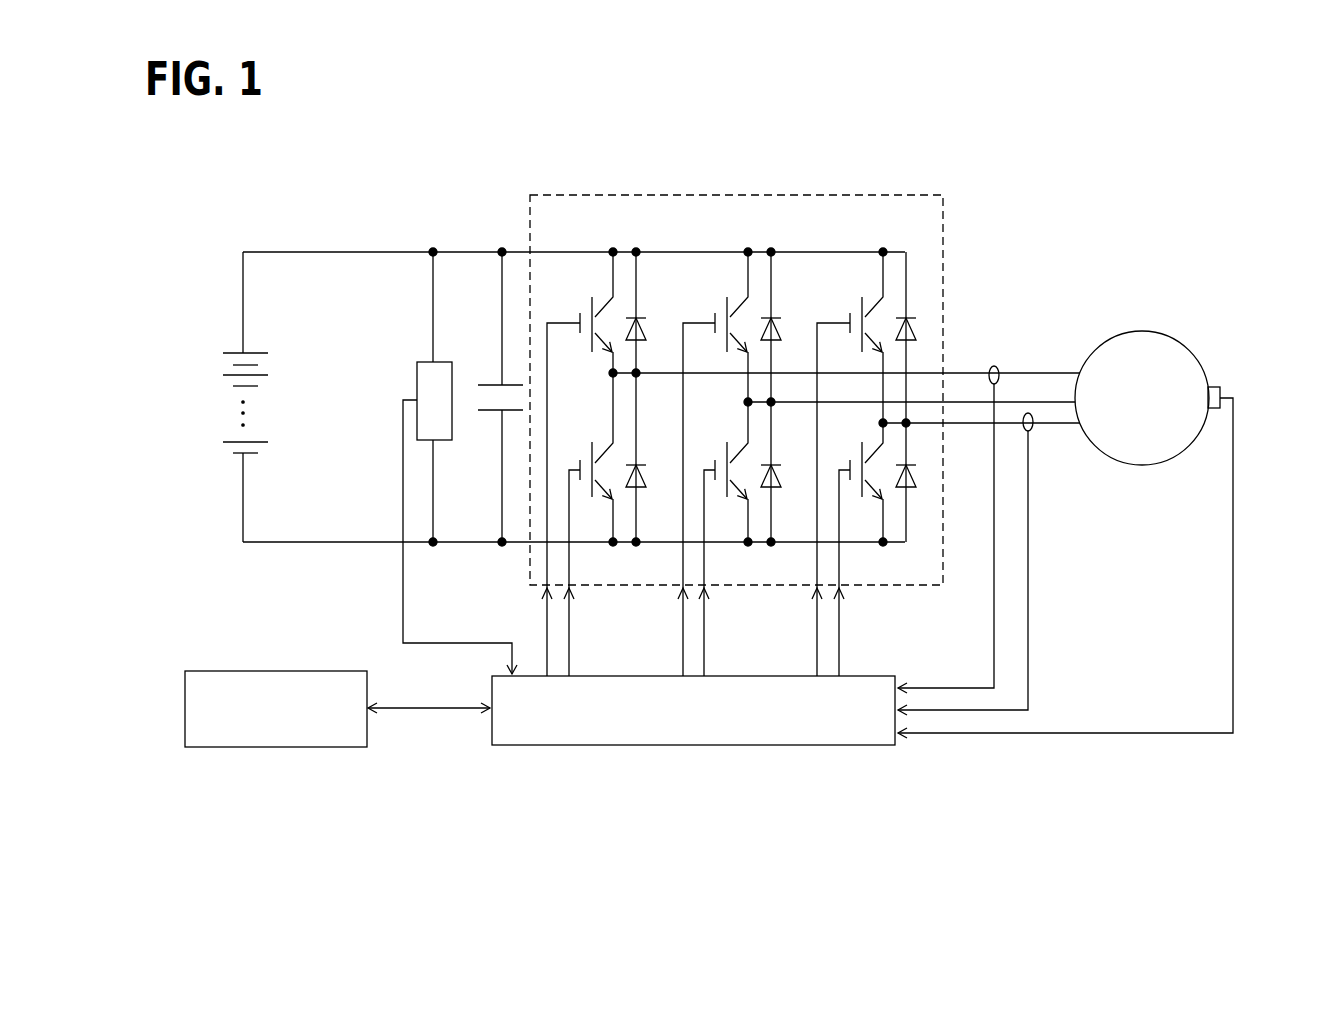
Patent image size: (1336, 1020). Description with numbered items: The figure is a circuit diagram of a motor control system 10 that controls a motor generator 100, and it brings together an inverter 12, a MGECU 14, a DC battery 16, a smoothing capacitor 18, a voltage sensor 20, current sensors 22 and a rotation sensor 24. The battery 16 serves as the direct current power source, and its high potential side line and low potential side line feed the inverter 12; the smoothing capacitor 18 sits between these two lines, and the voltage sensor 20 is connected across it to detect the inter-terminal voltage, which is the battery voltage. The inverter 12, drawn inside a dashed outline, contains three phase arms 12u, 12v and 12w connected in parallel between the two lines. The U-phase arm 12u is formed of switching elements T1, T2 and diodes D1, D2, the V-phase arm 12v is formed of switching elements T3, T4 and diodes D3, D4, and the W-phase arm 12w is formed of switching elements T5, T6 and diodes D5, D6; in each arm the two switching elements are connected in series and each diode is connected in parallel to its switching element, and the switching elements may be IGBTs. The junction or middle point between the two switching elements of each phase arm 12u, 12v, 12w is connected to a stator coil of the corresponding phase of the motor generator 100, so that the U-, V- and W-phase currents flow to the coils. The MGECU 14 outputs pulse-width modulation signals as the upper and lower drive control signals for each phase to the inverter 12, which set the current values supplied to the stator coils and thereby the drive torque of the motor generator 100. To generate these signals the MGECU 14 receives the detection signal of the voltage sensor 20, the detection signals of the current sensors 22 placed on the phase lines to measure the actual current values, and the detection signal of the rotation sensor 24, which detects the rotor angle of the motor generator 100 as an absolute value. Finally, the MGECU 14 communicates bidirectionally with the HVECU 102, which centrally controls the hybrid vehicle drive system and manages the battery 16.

The motor control system 10 is at (1027, 226).
The inverter 12 is at (948, 232).
The U-phase arm 12u is at (600, 265).
The V-phase arm 12v is at (735, 265).
The W-phase arm 12w is at (870, 265).
The MGECU 14 is at (881, 678).
The DC battery 16 is at (228, 365).
The smoothing capacitor 18 is at (488, 383).
The voltage sensor 20 is at (417, 380).
The current sensors 22 is at (994, 365).
The rotation sensor 24 is at (1222, 394).
The motor generator 100 is at (1141, 331).
The HVECU 102 is at (202, 671).
The switching element T1 is at (580, 316).
The switching element T2 is at (580, 460).
The switching element T3 is at (715, 316).
The switching element T4 is at (715, 460).
The switching element T5 is at (850, 316).
The switching element T6 is at (848, 460).
The diode D1 is at (644, 316).
The diode D2 is at (646, 463).
The diode D3 is at (779, 316).
The diode D4 is at (781, 463).
The diode D5 is at (914, 316).
The diode D6 is at (912, 466).